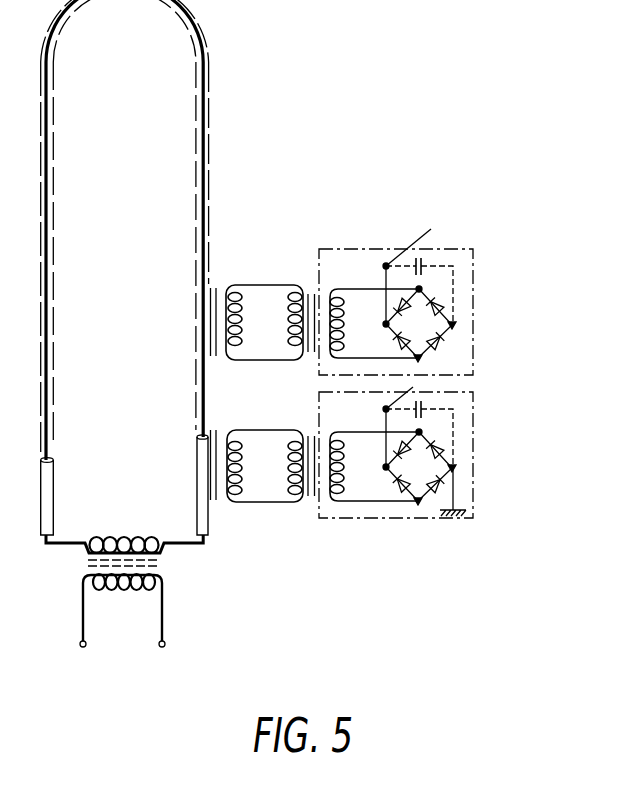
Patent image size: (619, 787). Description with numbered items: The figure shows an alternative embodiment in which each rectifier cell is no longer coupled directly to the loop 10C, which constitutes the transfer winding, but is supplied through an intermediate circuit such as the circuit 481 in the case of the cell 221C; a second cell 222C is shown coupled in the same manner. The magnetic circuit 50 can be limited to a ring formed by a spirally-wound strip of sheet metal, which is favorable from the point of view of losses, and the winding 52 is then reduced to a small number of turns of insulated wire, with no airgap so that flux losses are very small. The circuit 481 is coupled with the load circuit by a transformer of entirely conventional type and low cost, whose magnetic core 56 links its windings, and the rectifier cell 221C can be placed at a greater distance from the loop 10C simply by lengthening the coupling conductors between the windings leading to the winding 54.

The loop 10C is at (204, 79).
The magnetic circuit 50 is at (217, 432).
The intermediate circuit 481 is at (294, 496).
The winding 52 is at (239, 491).
The winding 54 is at (288, 483).
The transformer core 56 is at (313, 497).
The switching unit 222C is at (473, 251).
The rectifier cell 221C is at (473, 481).